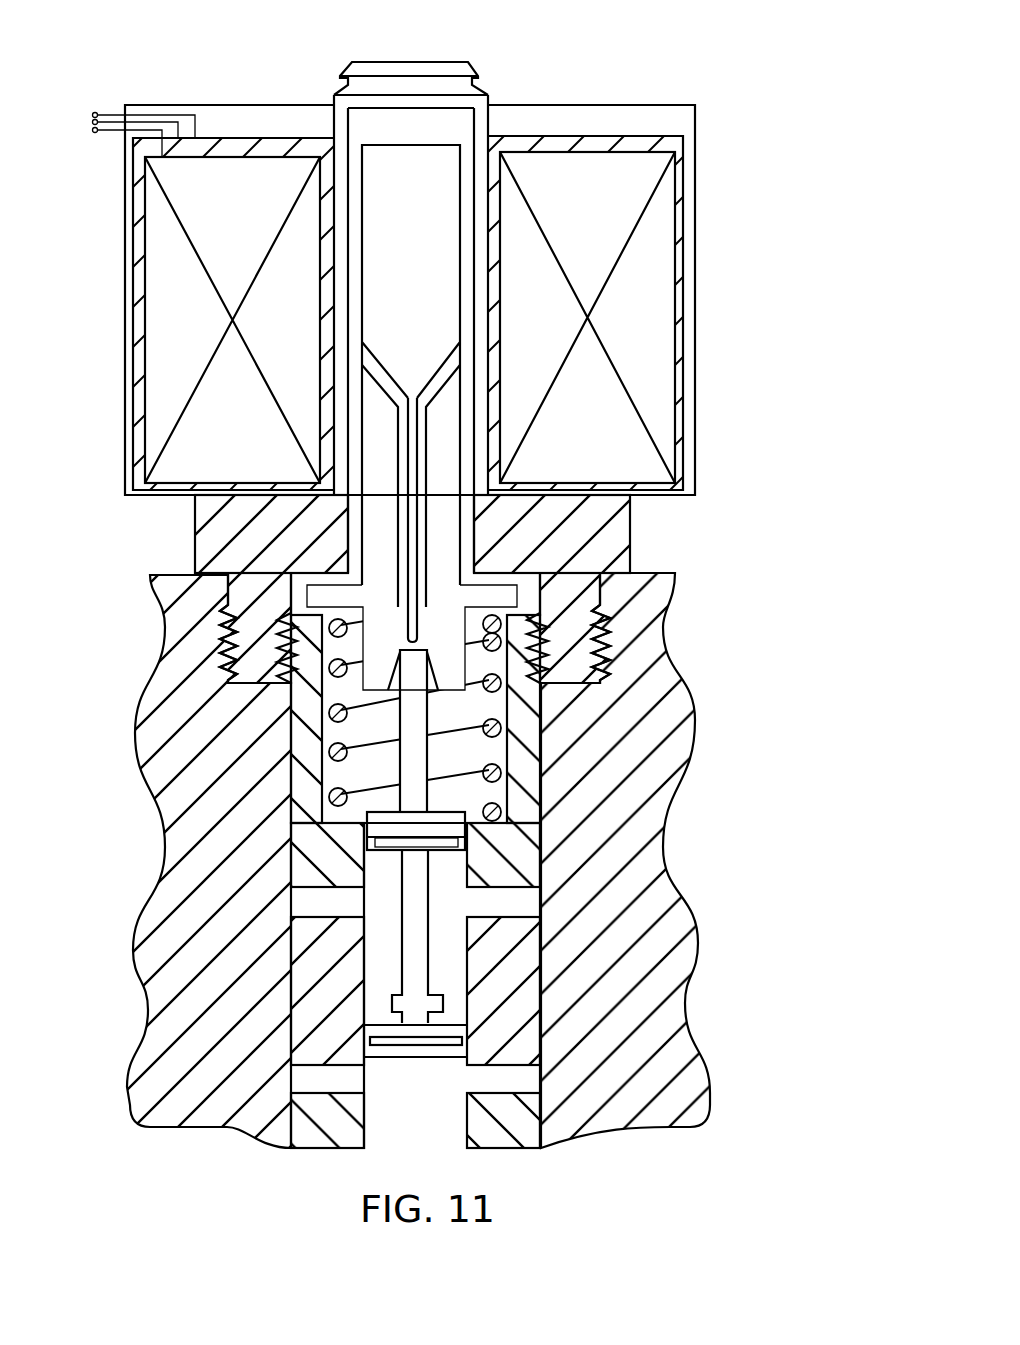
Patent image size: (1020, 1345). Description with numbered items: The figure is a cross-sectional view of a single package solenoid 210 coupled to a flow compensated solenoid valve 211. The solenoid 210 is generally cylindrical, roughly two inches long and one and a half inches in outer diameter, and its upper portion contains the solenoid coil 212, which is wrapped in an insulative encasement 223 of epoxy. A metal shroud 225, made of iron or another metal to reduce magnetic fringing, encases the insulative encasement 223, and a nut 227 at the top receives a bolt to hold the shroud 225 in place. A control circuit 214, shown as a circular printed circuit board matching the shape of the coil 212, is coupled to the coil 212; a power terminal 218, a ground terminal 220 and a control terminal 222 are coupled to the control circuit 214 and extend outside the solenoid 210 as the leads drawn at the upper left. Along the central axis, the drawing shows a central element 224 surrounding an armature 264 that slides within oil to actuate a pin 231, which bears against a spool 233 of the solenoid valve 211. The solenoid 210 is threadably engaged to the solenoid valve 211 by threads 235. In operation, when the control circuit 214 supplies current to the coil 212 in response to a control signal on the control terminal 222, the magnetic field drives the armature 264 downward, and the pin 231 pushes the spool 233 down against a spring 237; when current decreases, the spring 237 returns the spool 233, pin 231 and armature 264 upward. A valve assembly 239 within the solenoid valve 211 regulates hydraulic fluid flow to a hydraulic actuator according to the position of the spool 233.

The solenoid 210 is at (770, 114).
The flow compensated solenoid valve 211 is at (798, 908).
The solenoid coil 212 is at (156, 393).
The control circuit 214 is at (585, 165).
The power terminal 218 is at (158, 112).
The ground terminal 220 is at (140, 110).
The control terminal 222 is at (115, 140).
The insulative encasement 223 is at (142, 250).
The core tube 224 is at (462, 122).
The shroud 225 is at (132, 300).
The nut 227 is at (445, 66).
The pin 231 is at (417, 440).
The spool 233 is at (420, 790).
The threads 235 is at (253, 626).
The spring 237 is at (496, 730).
The valve assembly 239 is at (622, 1003).
The armature 264 is at (433, 241).